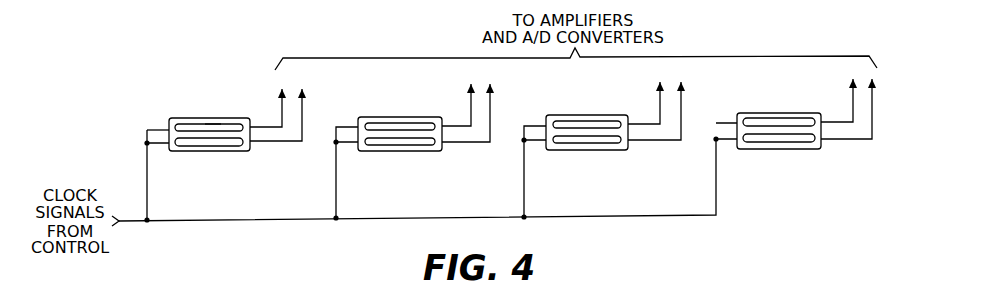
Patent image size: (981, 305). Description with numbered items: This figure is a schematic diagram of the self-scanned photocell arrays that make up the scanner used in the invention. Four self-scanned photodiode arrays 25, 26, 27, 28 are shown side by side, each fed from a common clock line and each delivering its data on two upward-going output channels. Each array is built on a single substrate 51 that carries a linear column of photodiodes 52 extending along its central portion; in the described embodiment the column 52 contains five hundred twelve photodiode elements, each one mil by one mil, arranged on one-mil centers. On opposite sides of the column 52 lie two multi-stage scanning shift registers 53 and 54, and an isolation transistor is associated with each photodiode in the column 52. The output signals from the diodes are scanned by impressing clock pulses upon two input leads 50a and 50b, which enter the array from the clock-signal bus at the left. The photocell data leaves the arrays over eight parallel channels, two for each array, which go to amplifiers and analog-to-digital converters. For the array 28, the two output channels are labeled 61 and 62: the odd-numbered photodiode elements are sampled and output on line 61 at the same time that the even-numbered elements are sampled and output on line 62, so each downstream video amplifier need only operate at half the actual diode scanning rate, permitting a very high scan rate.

The self-scanned photodiode array 25 is at (207, 145).
The self-scanned photodiode array 26 is at (404, 109).
The self-scanned photodiode array 27 is at (589, 106).
The self-scanned photodiode array 28 is at (818, 106).
The input lead 50a is at (166, 128).
The input lead 50b is at (158, 145).
The substrate 51 is at (187, 152).
The column of photodiodes 52 is at (213, 127).
The multi-stage scanning shift register 53 is at (185, 125).
The multi-stage scanning shift register 54 is at (230, 148).
The output channel 61 is at (853, 98).
The output channel 62 is at (872, 98).